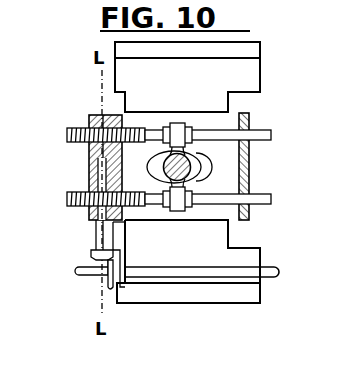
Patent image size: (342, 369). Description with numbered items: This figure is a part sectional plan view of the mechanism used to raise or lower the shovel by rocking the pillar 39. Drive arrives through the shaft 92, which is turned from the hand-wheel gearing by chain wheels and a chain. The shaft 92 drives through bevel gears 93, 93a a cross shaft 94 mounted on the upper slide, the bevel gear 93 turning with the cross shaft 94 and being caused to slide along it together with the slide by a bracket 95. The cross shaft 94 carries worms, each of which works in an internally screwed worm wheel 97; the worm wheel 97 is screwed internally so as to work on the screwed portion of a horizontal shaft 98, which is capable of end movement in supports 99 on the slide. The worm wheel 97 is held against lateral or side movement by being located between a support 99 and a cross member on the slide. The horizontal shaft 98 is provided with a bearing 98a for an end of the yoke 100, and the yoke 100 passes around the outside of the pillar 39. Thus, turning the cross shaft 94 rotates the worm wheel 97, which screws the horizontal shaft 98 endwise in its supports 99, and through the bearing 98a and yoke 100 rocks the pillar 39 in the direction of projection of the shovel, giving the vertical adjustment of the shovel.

The pillar 39 is at (190, 172).
The shaft 92 is at (178, 284).
The bevel gear 93 is at (108, 280).
The bevel gear 93a is at (91, 261).
The cross shaft 94 is at (96, 240).
The bracket 95 is at (115, 276).
The worm wheel 97 is at (95, 116).
The horizontal shaft 98 is at (149, 130).
The bearing 98a is at (184, 122).
The support 99 is at (90, 163).
The yoke 100 is at (203, 158).